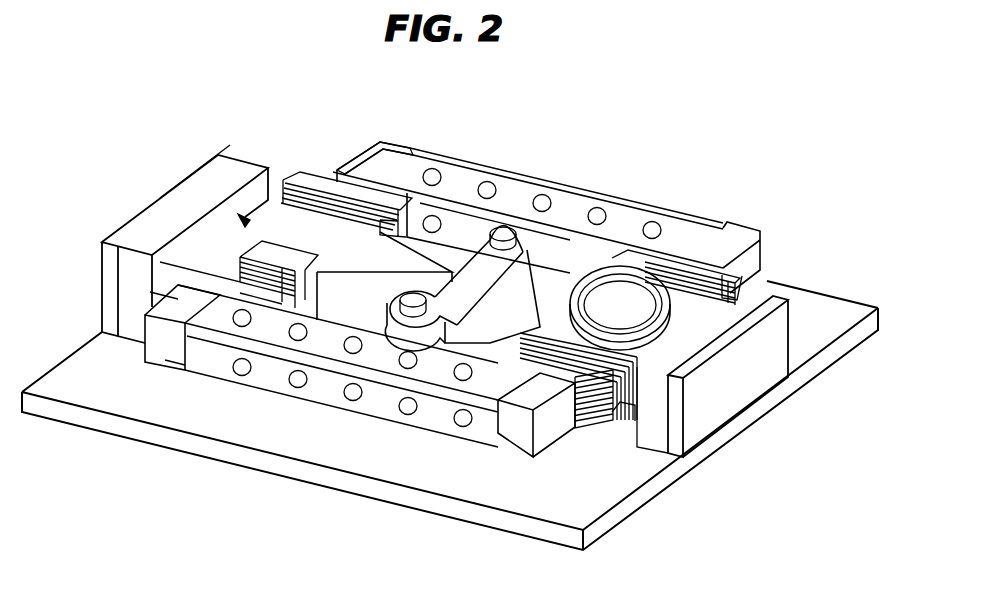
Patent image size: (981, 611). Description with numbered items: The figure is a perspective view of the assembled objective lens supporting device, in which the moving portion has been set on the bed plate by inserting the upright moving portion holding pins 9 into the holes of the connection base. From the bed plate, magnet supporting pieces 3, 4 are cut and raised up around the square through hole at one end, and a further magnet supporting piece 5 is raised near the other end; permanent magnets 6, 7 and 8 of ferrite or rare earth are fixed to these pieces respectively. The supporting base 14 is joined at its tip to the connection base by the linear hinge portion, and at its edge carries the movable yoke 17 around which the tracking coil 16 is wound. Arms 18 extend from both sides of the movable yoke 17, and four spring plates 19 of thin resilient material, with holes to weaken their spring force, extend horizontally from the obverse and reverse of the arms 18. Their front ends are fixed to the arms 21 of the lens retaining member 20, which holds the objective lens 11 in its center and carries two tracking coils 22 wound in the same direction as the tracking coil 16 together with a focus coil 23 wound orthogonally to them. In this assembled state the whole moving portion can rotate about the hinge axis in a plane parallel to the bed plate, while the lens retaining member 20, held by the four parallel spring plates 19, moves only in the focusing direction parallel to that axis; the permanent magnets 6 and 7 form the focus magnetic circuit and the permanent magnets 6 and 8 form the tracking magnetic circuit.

The magnet supporting piece 3 is at (698, 403).
The magnet supporting piece 4 is at (553, 245).
The magnet supporting piece 5 is at (140, 220).
The permanent magnet 6 is at (722, 305).
The permanent magnet 7 is at (580, 253).
The permanent magnet 8 is at (222, 182).
The moving portion holding pin 9 is at (507, 228).
The objective lens 11 is at (627, 310).
The supporting base 14 is at (245, 227).
The tracking coil 16 is at (197, 253).
The movable yoke 17 is at (437, 328).
The arm 18 is at (360, 150).
The spring plate 19 is at (680, 230).
The lens retaining member 20 is at (587, 423).
The arm 21 is at (757, 257).
The tracking coil 22 is at (740, 283).
The focus coil 23 is at (587, 427).